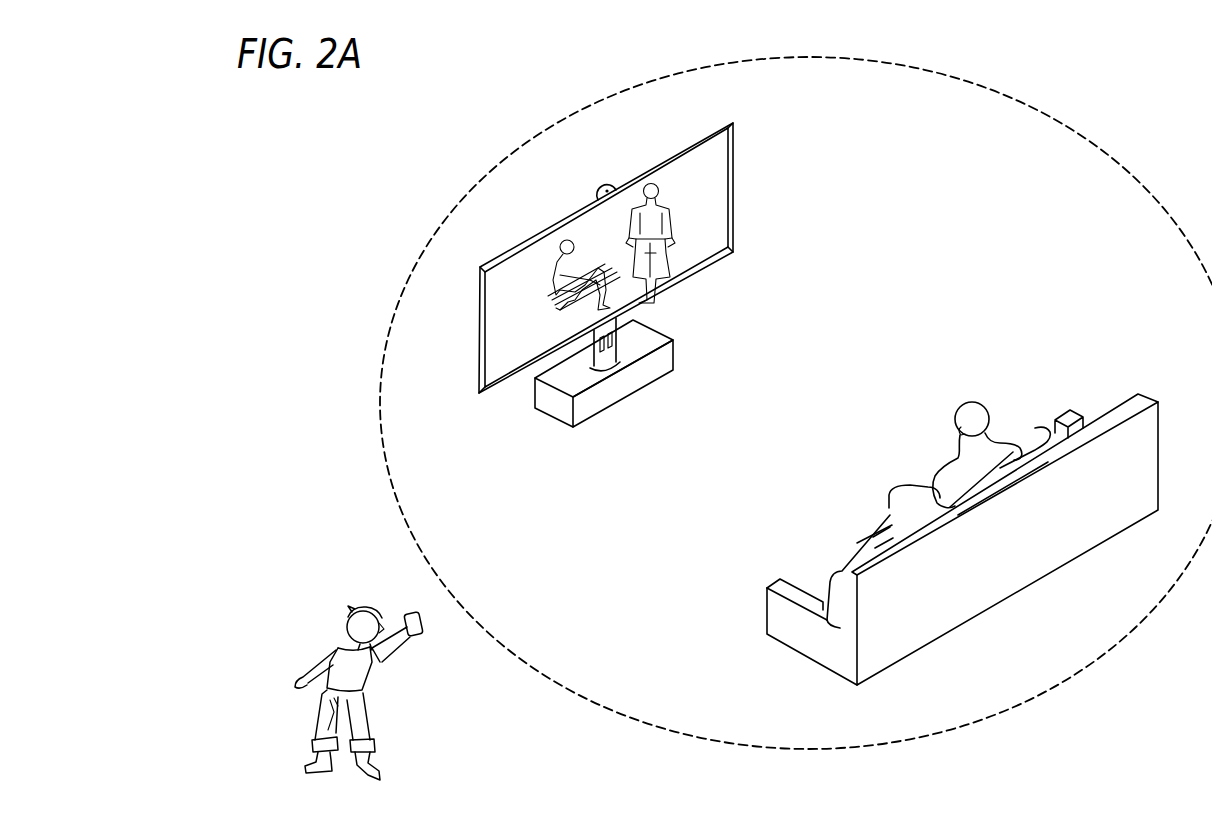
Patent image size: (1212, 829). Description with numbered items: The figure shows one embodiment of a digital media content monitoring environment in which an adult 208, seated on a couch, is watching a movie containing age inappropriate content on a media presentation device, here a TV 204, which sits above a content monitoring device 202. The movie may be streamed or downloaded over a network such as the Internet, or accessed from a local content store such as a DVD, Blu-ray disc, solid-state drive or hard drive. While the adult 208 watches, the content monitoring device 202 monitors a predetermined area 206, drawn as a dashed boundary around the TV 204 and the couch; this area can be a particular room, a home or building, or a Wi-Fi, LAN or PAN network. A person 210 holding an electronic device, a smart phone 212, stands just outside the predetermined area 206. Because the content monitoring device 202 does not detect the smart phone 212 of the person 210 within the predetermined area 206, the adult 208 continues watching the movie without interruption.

The content monitoring device 202 is at (623, 385).
The TV 204 is at (697, 242).
The predetermined area 206 is at (1035, 105).
The adult 208 is at (975, 413).
The person 210 is at (337, 643).
The smart phone 212 is at (422, 635).